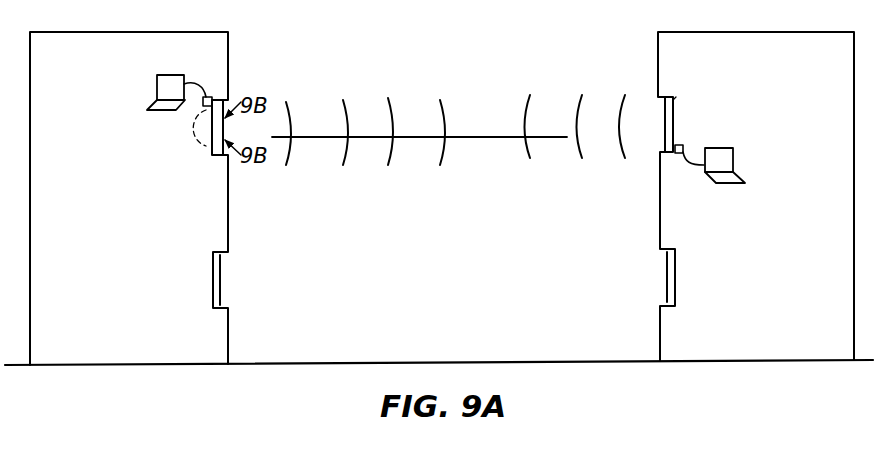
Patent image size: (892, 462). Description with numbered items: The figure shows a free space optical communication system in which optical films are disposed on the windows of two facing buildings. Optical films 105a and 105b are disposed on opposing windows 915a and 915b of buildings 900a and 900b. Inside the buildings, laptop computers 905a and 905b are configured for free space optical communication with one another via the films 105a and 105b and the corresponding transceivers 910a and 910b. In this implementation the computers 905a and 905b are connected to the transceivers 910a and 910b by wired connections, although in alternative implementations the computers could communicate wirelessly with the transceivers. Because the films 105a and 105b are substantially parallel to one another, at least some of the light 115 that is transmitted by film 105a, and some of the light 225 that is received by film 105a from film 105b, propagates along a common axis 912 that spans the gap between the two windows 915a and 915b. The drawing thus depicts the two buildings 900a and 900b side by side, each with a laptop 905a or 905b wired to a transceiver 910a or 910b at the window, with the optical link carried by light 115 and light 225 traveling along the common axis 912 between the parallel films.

The building 900a is at (115, 344).
The building 900b is at (765, 335).
The laptop computer 905a is at (156, 88).
The laptop computer 905b is at (727, 157).
The transceiver 910a is at (208, 97).
The transceiver 910b is at (679, 145).
The window 915a is at (223, 128).
The window 915b is at (662, 134).
The optical film 105a is at (205, 128).
The optical film 105b is at (676, 97).
The light 115 is at (289, 98).
The light 225 is at (389, 95).
The common axis 912 is at (422, 138).